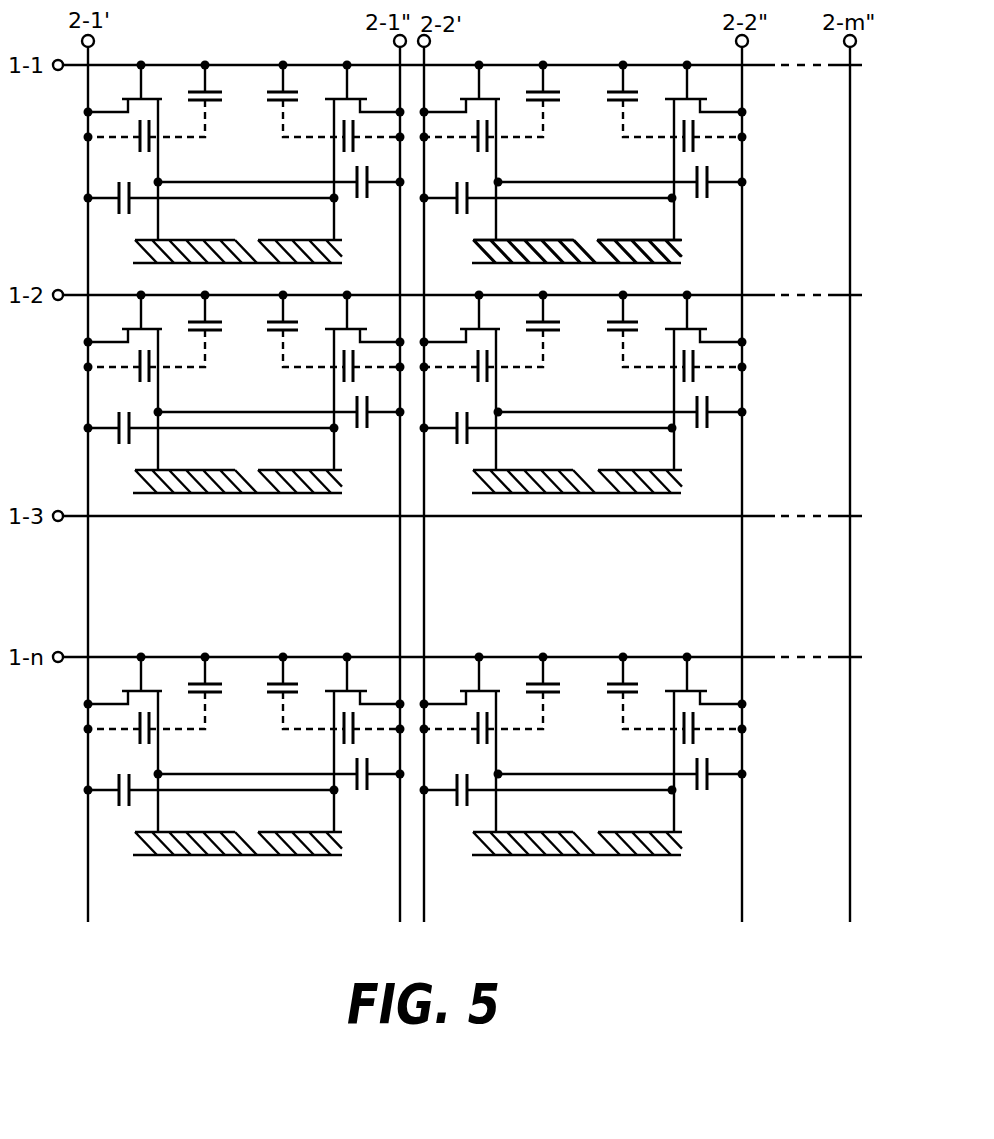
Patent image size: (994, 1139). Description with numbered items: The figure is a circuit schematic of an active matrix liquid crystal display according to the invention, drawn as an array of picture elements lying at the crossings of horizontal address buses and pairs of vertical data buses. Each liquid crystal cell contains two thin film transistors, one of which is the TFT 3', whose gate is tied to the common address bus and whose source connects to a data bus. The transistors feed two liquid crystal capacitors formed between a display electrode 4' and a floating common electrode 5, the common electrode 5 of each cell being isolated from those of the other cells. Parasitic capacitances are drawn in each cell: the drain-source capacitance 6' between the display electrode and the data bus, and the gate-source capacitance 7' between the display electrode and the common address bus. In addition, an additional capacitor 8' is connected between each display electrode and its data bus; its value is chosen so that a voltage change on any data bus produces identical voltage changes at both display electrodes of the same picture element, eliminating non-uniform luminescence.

The thin film transistor 3' is at (132, 127).
The display electrode 4' is at (365, 233).
The common electrode 5 is at (582, 263).
The drain-source capacitance 6' is at (98, 146).
The gate-source capacitance 7' is at (198, 76).
The additional capacitor 8' is at (279, 202).